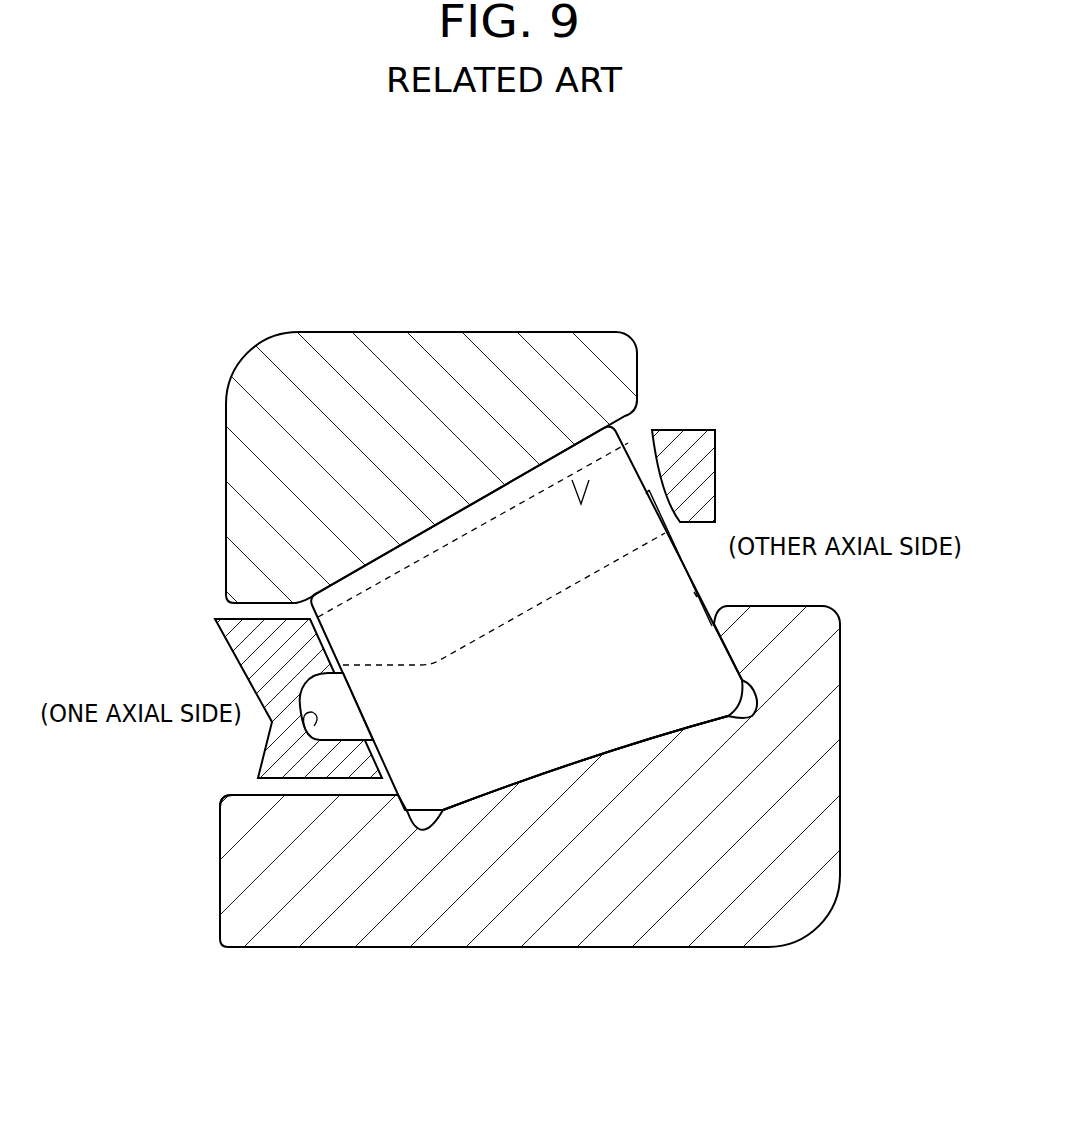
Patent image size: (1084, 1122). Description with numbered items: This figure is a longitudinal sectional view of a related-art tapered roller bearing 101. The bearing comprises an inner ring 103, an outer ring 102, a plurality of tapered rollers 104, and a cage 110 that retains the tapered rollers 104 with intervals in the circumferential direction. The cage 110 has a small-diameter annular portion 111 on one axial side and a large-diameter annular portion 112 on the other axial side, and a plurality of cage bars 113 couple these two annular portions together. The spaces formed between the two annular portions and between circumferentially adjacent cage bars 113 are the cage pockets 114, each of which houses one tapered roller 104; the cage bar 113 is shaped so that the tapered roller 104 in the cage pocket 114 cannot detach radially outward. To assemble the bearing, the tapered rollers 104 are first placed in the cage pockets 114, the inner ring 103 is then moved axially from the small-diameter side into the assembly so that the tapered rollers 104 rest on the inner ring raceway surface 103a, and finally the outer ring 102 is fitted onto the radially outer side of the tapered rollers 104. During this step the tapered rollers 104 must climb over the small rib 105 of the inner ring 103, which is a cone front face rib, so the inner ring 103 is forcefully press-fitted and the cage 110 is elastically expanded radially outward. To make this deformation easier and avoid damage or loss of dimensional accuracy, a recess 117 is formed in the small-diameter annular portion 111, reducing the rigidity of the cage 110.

The tapered roller bearing 101 is at (248, 357).
The outer ring 102 is at (446, 347).
The inner ring 103 is at (563, 923).
The inner ring raceway surface 103a is at (541, 772).
The tapered roller 104 is at (612, 705).
The small rib 105 is at (232, 832).
The cage 110 is at (702, 426).
The small-diameter annular portion 111 is at (240, 632).
The large-diameter annular portion 112 is at (698, 480).
The cage bar 113 is at (413, 603).
The cage pocket 114 is at (579, 480).
The recess 117 is at (305, 728).